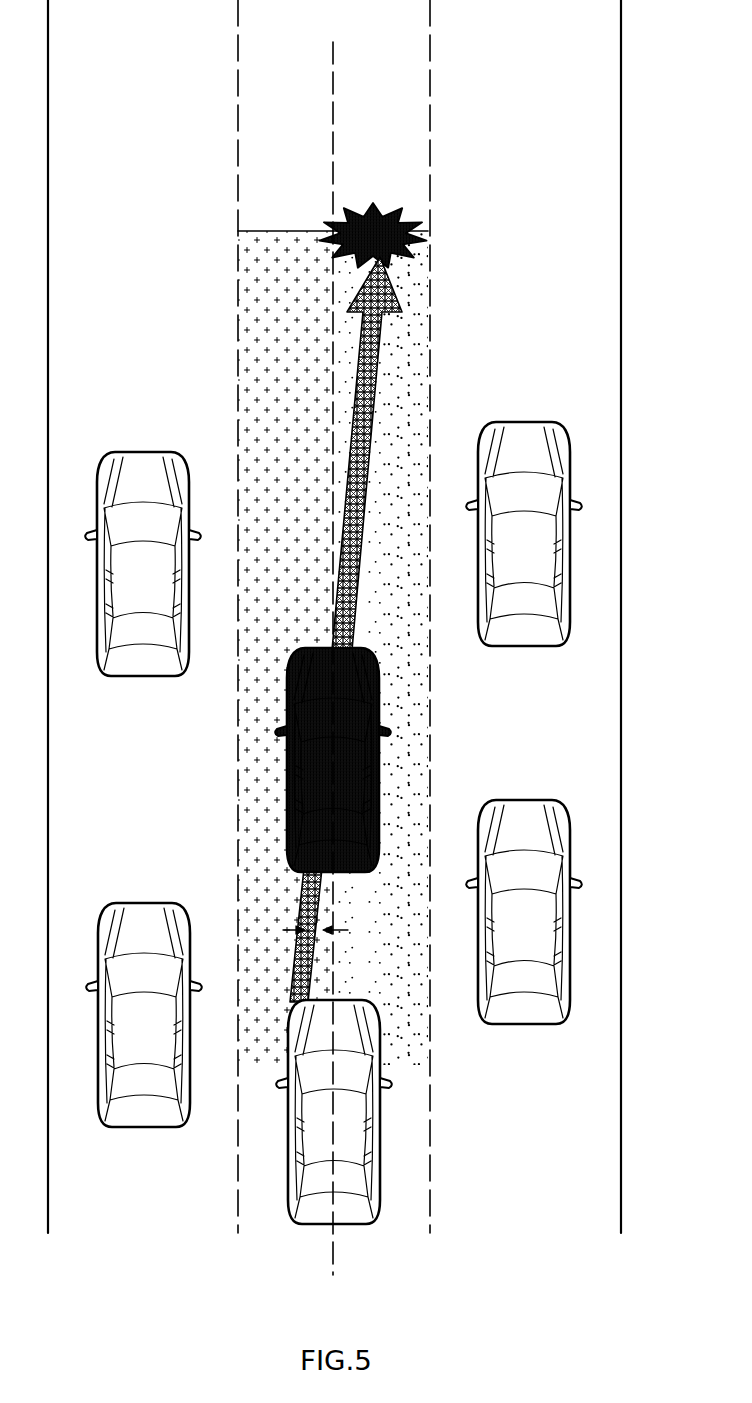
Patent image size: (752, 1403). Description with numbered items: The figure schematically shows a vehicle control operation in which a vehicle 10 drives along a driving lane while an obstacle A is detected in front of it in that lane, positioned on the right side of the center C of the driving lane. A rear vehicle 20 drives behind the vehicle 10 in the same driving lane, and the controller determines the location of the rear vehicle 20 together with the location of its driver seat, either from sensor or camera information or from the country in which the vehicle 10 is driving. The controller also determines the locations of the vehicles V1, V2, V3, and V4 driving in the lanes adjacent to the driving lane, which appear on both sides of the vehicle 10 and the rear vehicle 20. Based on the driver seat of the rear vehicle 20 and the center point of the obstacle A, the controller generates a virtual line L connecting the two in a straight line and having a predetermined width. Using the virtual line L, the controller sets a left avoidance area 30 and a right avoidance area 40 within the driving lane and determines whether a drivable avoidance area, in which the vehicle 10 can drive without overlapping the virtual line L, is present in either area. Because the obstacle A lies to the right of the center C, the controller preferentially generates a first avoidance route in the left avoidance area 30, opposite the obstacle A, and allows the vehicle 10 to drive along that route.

The vehicle 10 is at (288, 772).
The rear vehicle 20 is at (363, 1223).
The left avoidance area 30 is at (301, 561).
The right avoidance area 40 is at (407, 561).
The virtual line L is at (353, 608).
The center of the driving lane C is at (334, 101).
The obstacle A is at (373, 221).
The vehicle driving in adjacent lane V1 is at (143, 549).
The vehicle driving in adjacent lane V2 is at (144, 1000).
The vehicle driving in adjacent lane V3 is at (524, 519).
The vehicle driving in adjacent lane V4 is at (524, 897).